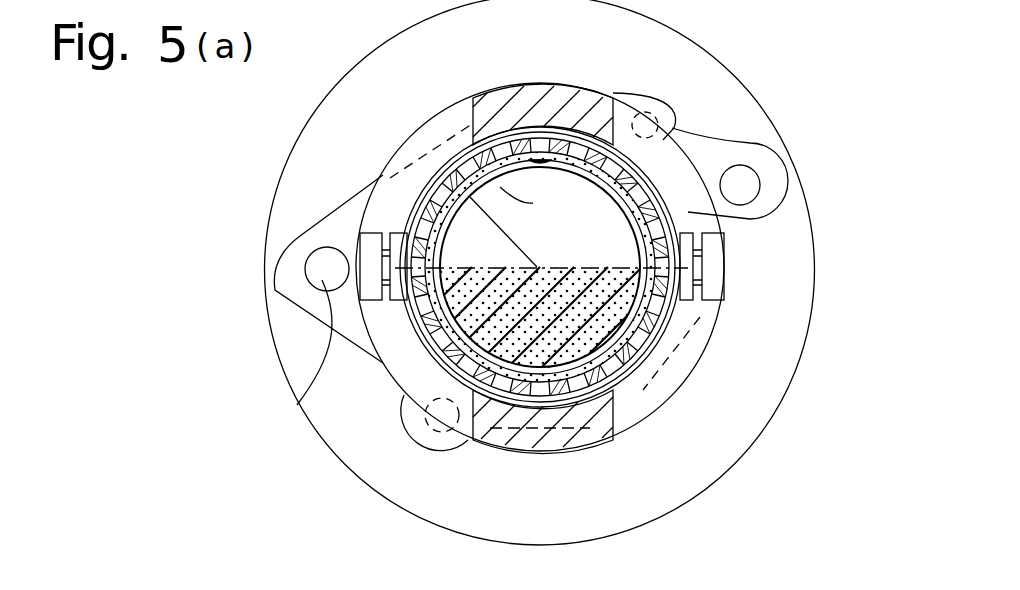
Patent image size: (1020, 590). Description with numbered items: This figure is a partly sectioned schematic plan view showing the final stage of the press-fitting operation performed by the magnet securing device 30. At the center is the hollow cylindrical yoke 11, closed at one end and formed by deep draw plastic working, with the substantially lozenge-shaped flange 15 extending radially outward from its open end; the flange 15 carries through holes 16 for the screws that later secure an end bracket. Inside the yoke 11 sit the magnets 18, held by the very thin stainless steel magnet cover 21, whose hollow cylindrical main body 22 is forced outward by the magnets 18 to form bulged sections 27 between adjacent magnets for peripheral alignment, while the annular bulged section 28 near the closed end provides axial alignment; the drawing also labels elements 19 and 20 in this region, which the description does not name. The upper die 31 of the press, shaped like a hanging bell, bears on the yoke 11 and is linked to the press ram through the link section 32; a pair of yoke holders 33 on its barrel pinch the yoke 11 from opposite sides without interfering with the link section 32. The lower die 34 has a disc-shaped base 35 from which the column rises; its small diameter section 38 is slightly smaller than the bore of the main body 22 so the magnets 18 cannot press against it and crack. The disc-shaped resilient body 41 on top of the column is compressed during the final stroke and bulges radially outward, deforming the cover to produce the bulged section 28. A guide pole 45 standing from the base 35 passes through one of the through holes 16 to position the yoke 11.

The yoke 11 is at (430, 362).
The flange 15 is at (313, 300).
The through holes 16 is at (310, 286).
The magnets 18 is at (418, 215).
The outer race 19 is at (632, 168).
The shaft 20 is at (478, 158).
The magnet cover 21 is at (633, 188).
The main body 22 is at (725, 250).
The bulged sections 27 is at (410, 195).
The bulged section 28 is at (627, 388).
The magnet securing device 30 is at (237, 147).
The upper die 31 is at (630, 91).
The link section 32 is at (586, 108).
The yoke holders 33 is at (360, 238).
The lower die 34 is at (705, 46).
The base 35 is at (750, 407).
The small diameter section 38 is at (470, 140).
The resilient body 41 is at (542, 407).
The guide pole 45 is at (299, 402).